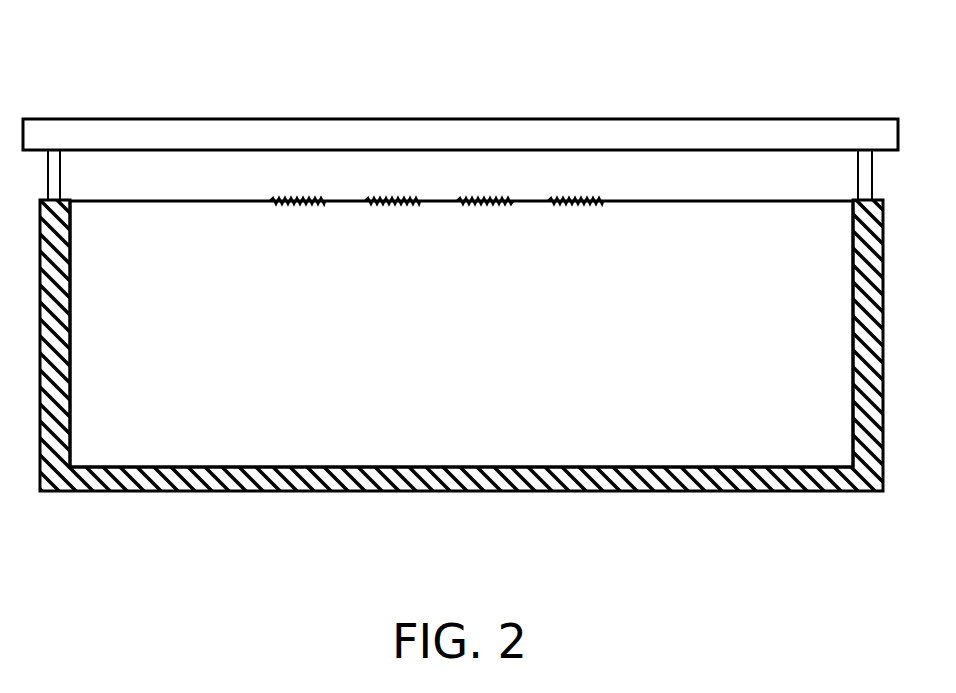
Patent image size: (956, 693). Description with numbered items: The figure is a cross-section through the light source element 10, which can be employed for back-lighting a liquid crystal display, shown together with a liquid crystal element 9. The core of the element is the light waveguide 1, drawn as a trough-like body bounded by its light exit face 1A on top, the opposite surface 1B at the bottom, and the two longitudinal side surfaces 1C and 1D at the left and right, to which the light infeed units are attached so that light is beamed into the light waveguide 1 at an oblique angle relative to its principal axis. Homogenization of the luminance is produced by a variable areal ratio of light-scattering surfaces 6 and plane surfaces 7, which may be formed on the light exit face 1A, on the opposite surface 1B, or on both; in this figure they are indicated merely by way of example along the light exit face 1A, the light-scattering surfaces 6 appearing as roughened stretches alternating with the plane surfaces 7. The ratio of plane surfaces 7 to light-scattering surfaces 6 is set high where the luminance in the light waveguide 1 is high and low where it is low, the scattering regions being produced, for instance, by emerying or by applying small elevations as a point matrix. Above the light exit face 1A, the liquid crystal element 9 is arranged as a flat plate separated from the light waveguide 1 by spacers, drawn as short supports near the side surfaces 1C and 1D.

The light waveguide 1 is at (480, 352).
The light exit face 1A is at (172, 201).
The surface lying opposite the light exit face 1B is at (205, 465).
The longitudinal side surface 1C is at (70, 332).
The longitudinal side surface 1D is at (853, 310).
The light-scattering surfaces 6 is at (392, 201).
The plane surfaces 7 is at (438, 201).
The liquid crystal element 9 is at (382, 119).
The light source element 10 is at (687, 86).